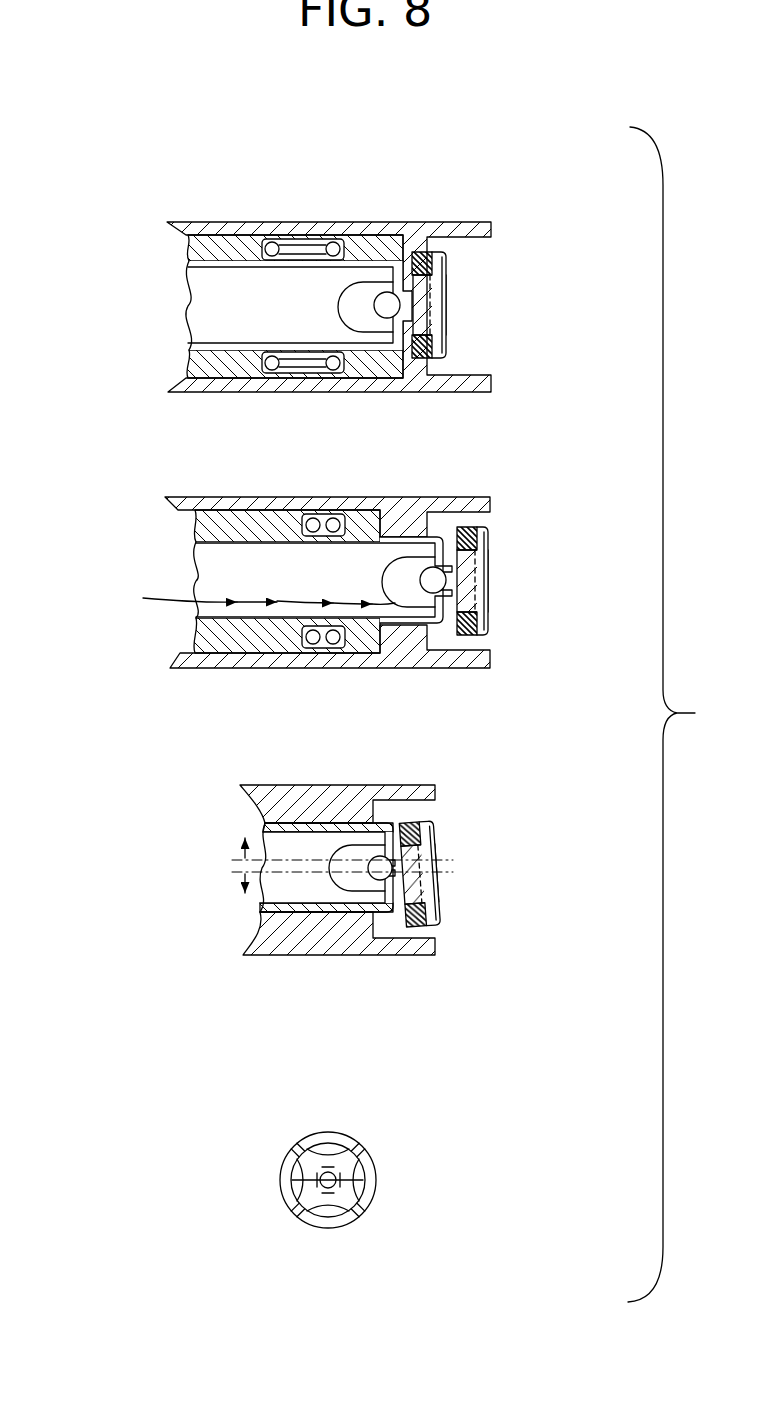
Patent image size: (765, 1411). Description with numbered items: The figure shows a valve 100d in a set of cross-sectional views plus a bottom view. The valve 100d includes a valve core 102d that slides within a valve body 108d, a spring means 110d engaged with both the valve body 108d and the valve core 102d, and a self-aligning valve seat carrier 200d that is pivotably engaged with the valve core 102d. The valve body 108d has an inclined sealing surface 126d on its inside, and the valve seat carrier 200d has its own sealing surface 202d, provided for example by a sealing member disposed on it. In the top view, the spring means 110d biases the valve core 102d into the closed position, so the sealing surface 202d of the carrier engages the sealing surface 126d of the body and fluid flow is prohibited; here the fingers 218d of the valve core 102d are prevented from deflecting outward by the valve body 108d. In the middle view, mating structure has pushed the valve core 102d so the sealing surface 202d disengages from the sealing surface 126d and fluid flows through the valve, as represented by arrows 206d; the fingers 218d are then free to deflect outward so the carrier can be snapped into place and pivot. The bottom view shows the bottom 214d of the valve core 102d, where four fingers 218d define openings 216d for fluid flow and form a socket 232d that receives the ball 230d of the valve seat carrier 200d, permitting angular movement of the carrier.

The valve 100d is at (331, 179).
The valve core 102d is at (199, 364).
The valve body 108d is at (378, 219).
The spring means 110d is at (279, 245).
The sealing surface 126d is at (427, 245).
The self-aligning valve seat carrier 200d is at (456, 270).
The sealing surface 202d is at (418, 362).
The arrows 206d is at (297, 603).
The bottom of the valve core 214d is at (379, 1198).
The openings 216d is at (330, 1144).
The fingers 218d is at (296, 1148).
The ball 230d is at (367, 870).
The socket 232d is at (299, 1194).